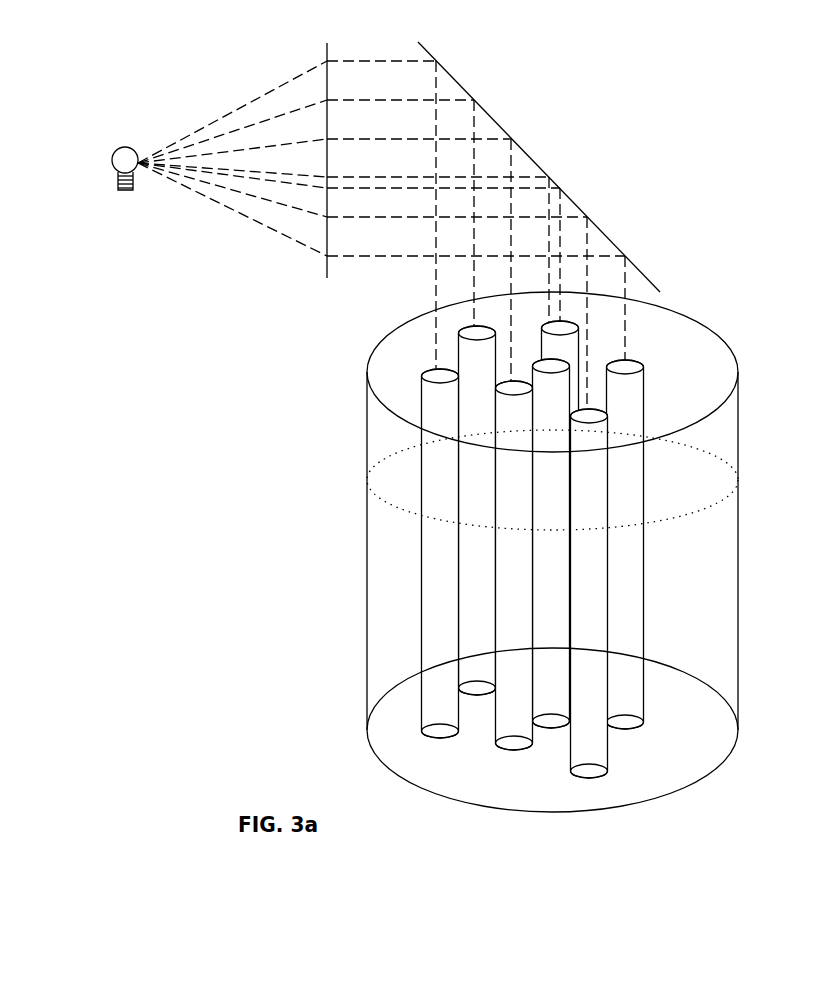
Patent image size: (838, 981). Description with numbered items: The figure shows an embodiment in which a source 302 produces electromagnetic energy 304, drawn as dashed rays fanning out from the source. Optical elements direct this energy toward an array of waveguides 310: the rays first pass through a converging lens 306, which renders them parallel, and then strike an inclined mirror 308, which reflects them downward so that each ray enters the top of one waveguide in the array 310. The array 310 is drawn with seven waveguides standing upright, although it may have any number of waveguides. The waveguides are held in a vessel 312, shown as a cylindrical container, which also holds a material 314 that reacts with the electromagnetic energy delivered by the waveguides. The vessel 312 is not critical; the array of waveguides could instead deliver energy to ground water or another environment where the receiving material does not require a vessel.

The source 302 is at (130, 190).
The electromagnetic energy 304 is at (263, 228).
The converging lens 306 is at (320, 265).
The mirror 308 is at (542, 163).
The array of waveguides 310 is at (647, 548).
The vessel 312 is at (738, 518).
The material 314 is at (712, 604).